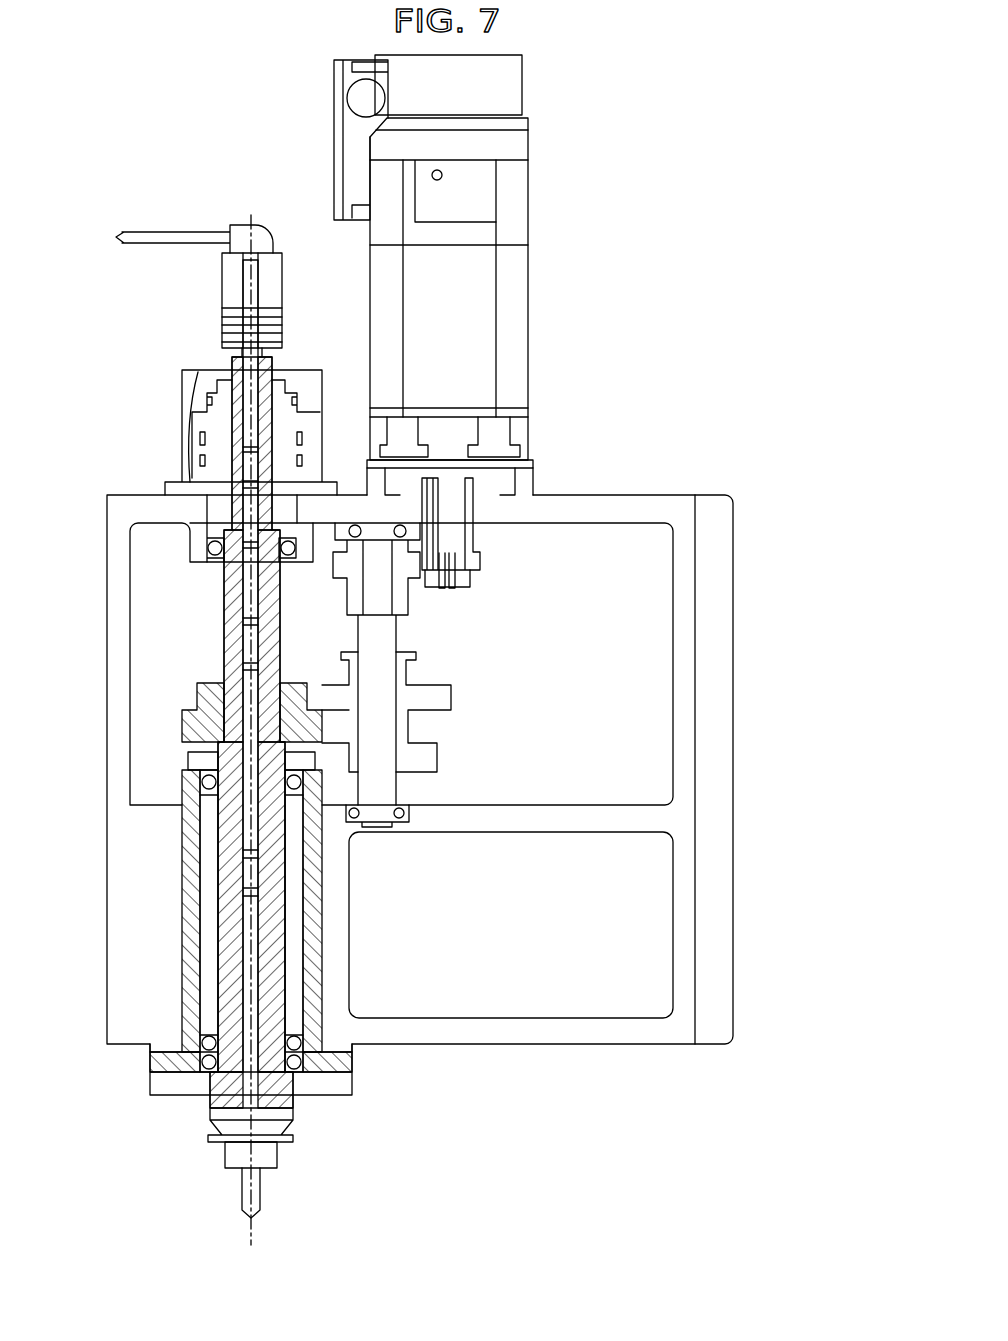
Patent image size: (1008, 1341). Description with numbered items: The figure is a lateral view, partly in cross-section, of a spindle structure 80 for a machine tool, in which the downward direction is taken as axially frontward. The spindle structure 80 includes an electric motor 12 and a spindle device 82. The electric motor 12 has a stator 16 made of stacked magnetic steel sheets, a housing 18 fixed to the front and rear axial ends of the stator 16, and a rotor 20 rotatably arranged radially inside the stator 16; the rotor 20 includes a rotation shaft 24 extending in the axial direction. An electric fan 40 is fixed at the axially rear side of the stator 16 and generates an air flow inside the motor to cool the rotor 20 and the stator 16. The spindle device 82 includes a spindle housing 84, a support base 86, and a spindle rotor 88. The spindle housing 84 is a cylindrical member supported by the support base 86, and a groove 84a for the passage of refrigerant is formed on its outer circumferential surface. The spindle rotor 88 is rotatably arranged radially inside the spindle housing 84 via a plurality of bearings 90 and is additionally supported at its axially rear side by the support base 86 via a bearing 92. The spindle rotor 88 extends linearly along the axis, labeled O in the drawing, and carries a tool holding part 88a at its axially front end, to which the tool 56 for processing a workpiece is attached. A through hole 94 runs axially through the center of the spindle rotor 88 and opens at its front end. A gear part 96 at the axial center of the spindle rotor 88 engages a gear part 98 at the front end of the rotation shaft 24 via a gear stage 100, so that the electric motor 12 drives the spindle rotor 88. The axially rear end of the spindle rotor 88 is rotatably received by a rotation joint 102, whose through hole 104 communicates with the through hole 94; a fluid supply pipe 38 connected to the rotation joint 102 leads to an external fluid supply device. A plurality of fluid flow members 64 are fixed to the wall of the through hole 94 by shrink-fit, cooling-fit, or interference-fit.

The electric motor 12 is at (556, 306).
The stator 16 is at (382, 312).
The housing 18 is at (508, 205).
The rotor 20 is at (496, 375).
The rotation shaft 24 is at (455, 490).
The fluid supply pipe 38 is at (147, 230).
The electric fan 40 is at (500, 95).
The tool 56 is at (243, 1190).
The fluid flow members 64 is at (226, 676).
The spindle structure 80 is at (852, 115).
The spindle device 82 is at (764, 621).
The spindle housing 84 is at (195, 923).
The groove 84a is at (200, 845).
The support base 86 is at (548, 1030).
The spindle rotor 88 is at (290, 882).
The tool holding part 88a is at (232, 1153).
The bearings 90 is at (205, 775).
The bearing 92 is at (212, 547).
The through hole 94 is at (215, 935).
The gear part 96 is at (205, 690).
The gear part 98 is at (478, 565).
The gear stage 100 is at (385, 637).
The rotation joint 102 is at (232, 300).
The through hole 104 is at (243, 290).
The rotation axis O is at (251, 1228).